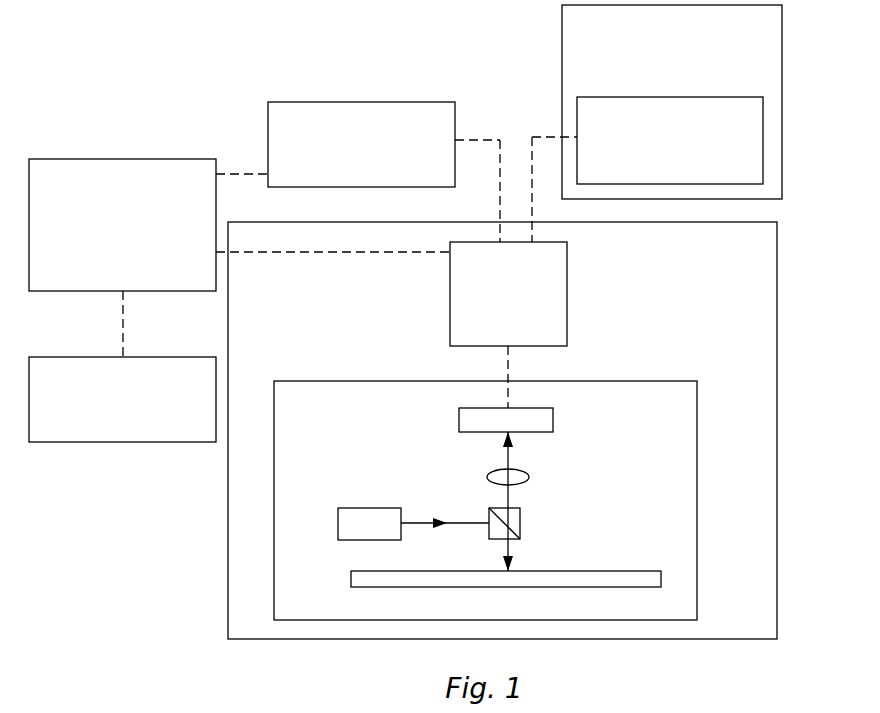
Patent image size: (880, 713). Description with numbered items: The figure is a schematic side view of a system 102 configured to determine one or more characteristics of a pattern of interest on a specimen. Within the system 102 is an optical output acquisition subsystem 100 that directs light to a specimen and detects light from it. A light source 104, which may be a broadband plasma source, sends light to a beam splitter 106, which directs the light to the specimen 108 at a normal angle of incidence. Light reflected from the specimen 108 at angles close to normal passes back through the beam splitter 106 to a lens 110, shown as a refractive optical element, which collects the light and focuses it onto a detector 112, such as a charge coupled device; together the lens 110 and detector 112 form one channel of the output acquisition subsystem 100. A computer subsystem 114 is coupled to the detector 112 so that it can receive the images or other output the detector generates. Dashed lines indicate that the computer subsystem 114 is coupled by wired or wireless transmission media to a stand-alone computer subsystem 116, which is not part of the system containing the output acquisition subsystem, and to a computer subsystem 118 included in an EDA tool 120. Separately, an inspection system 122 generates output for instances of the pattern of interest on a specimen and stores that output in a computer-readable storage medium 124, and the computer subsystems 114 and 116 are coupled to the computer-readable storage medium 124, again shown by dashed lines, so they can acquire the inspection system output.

The output acquisition subsystem 100 is at (697, 465).
The system 102 is at (777, 330).
The light source 104 is at (356, 508).
The beam splitter 106 is at (521, 526).
The specimen 108 is at (357, 571).
The lens 110 is at (525, 473).
The detector 112 is at (459, 419).
The computer subsystem 114 is at (508, 294).
The computer subsystem 116 is at (361, 144).
The computer subsystem 118 is at (670, 140).
The EDA tool 120 is at (672, 102).
The inspection system 122 is at (122, 399).
The computer-readable storage medium 124 is at (122, 225).